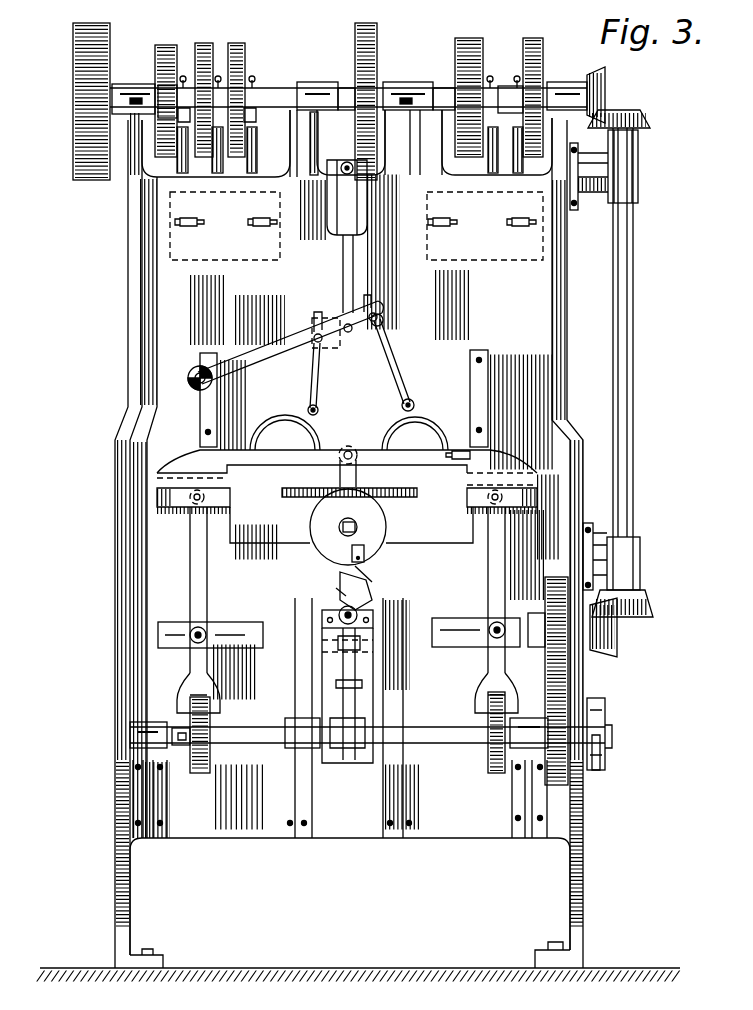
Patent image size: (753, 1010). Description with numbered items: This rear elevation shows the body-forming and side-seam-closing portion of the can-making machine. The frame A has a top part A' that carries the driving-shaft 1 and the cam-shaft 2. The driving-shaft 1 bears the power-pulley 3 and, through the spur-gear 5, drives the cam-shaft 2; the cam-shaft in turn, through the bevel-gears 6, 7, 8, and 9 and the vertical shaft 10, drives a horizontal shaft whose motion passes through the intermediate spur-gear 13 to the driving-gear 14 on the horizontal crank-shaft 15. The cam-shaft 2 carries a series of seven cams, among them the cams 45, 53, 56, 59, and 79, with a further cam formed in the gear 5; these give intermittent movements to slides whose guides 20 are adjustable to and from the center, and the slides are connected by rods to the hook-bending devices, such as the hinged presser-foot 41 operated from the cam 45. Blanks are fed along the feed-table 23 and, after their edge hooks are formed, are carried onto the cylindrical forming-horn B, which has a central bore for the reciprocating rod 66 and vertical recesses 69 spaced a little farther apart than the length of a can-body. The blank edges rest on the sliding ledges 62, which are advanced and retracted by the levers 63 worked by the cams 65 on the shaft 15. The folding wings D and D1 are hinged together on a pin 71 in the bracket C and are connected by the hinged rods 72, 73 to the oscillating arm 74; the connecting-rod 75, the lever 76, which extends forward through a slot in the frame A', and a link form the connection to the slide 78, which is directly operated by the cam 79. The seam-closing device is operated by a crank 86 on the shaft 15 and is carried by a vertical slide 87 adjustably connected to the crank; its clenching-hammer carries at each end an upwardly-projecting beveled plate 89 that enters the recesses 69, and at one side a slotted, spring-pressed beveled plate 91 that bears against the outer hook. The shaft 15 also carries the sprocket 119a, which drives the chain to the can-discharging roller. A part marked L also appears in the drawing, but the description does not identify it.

The driving-shaft 1 is at (272, 96).
The cam-shaft 2 is at (447, 90).
The power-pulley 3 is at (72, 62).
The spur-gear 5 is at (160, 46).
The bevel-gear 6 is at (606, 74).
The bevel-gear 7 is at (648, 120).
The bevel-gear 8 is at (654, 613).
The bevel-gear 9 is at (612, 652).
The vertical shaft 10 is at (634, 389).
The intermediate spur-gear 13 is at (569, 677).
The driving-gear 14 is at (601, 758).
The horizontal crank-shaft 15 is at (432, 728).
The guides 20 is at (200, 224).
The feed-table 23 is at (420, 493).
The presser-foot 41 is at (158, 86).
The cam 45 is at (245, 43).
The cam 53 is at (484, 48).
The cam 56 is at (210, 43).
The cam 59 is at (544, 50).
The sliding ledges 62 is at (232, 502).
The levers 63 is at (208, 592).
The cams 65 is at (212, 771).
The reciprocating rod 66 is at (386, 526).
The vertical recesses 69 is at (366, 552).
The pin 71 is at (351, 452).
The hinged rod 72 is at (320, 376).
The hinged rod 73 is at (400, 371).
The oscillating arm 74 is at (275, 345).
The connecting-rod 75 is at (343, 278).
The lever 76 is at (330, 186).
The slide 78 is at (345, 88).
The cam 79 is at (378, 55).
The crank 86 is at (362, 766).
The vertical slide 87 is at (375, 658).
The upwardly-projecting plate 89 is at (350, 578).
The beveled plate 91 is at (338, 587).
The sprocket 119a is at (604, 720).
The frame A is at (360, 907).
The top part of frame A' is at (338, 539).
The forming-horn B is at (308, 530).
The bracket C is at (510, 462).
The folding wing D is at (285, 420).
The folding wing D1 is at (415, 425).
The lever L is at (356, 588).